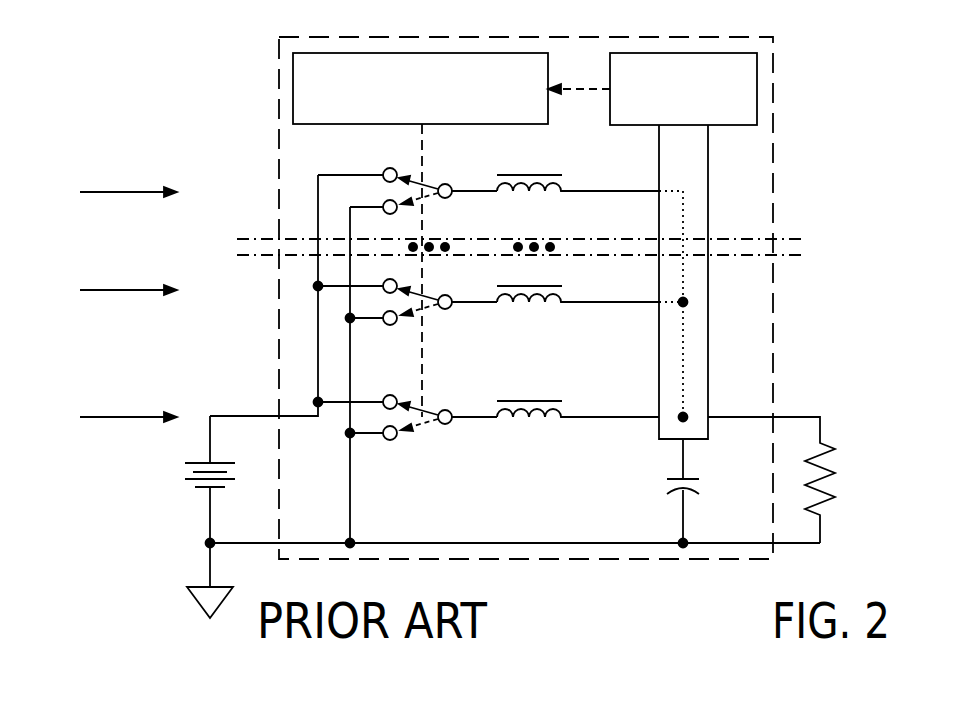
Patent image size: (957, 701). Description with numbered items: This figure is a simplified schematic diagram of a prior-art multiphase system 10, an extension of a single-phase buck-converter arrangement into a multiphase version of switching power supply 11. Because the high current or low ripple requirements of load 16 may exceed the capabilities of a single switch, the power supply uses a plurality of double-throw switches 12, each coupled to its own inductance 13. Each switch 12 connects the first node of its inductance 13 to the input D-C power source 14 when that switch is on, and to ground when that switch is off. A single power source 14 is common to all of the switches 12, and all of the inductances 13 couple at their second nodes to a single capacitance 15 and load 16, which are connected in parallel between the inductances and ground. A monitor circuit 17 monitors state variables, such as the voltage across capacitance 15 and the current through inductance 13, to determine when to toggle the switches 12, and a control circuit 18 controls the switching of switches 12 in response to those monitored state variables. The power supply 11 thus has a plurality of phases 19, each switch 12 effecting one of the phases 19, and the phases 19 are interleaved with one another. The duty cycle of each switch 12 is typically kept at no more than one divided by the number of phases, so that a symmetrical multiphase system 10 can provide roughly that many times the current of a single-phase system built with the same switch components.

The multiphase system 10 is at (705, 615).
The switching power supply 11 is at (543, 559).
The double-throw switch 12 is at (447, 424).
The inductance 13 is at (528, 412).
The input D-C power source 14 is at (200, 488).
The capacitance 15 is at (672, 493).
The load 16 is at (830, 452).
The monitor circuit 17 is at (757, 72).
The control circuit 18 is at (293, 72).
The phases 19 is at (114, 305).